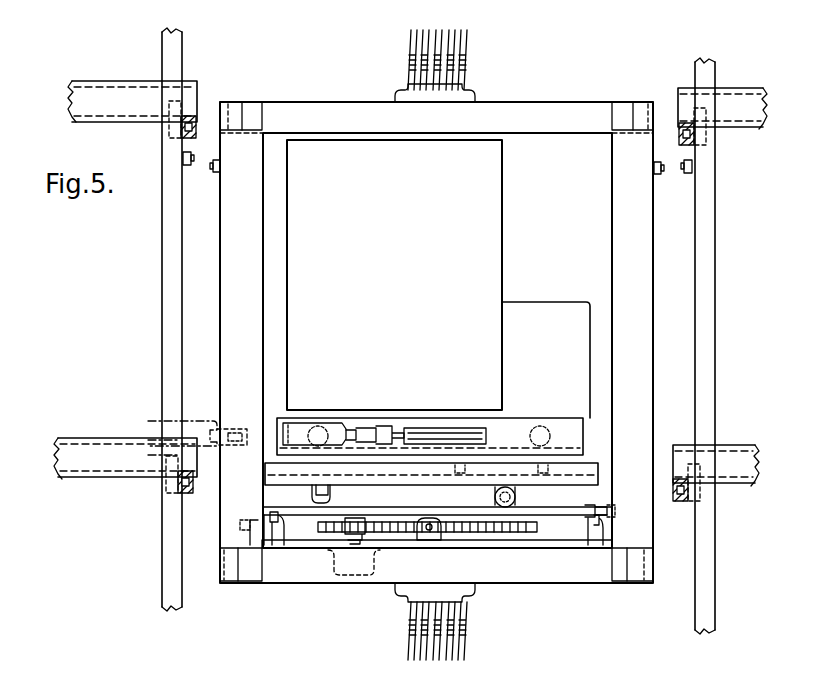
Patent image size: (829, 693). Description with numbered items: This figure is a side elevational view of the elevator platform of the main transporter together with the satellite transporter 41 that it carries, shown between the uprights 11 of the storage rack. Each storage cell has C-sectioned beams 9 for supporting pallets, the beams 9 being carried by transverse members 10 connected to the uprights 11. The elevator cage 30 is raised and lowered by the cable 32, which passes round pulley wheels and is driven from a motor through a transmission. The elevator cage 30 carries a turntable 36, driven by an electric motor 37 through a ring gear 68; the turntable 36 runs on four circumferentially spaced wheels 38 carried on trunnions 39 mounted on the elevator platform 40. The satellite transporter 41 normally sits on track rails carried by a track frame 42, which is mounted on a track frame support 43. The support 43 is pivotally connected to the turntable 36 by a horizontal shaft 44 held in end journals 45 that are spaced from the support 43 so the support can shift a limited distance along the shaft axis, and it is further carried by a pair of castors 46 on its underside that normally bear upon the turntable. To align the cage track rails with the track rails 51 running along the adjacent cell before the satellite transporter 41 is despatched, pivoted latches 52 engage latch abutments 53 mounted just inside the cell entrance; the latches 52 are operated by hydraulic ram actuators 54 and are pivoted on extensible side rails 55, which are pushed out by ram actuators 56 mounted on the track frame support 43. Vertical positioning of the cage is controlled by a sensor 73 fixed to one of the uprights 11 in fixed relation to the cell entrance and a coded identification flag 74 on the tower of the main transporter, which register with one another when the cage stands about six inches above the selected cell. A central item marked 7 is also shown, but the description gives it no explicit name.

The panel 7 is at (401, 256).
The C-sectioned beams 9 is at (110, 81).
The transverse members 10 is at (690, 143).
The uprights 11 is at (163, 280).
The elevator cage 30 is at (622, 245).
The cable 32 is at (405, 622).
The turntable 36 is at (588, 512).
The electric motor 37 is at (334, 578).
The wheels 38 is at (263, 527).
The trunnions 39 is at (280, 535).
The elevator platform 40 is at (295, 548).
The satellite transporter 41 is at (558, 308).
The track frame 42 is at (556, 428).
The track frame support 43 is at (590, 468).
The horizontal shaft 44 is at (508, 510).
The end journals 45 is at (506, 490).
The castors 46 is at (266, 491).
The track rails 51 is at (83, 470).
The pivoted latches 52 is at (300, 426).
The latch abutments 53 is at (138, 476).
The hydraulic ram actuators 54 is at (372, 430).
The extensible side rails 55 is at (388, 428).
The ram actuators 56 is at (458, 432).
The ring gear 68 is at (486, 530).
The sensor 73 is at (190, 163).
The coded identification flag 74 is at (218, 168).